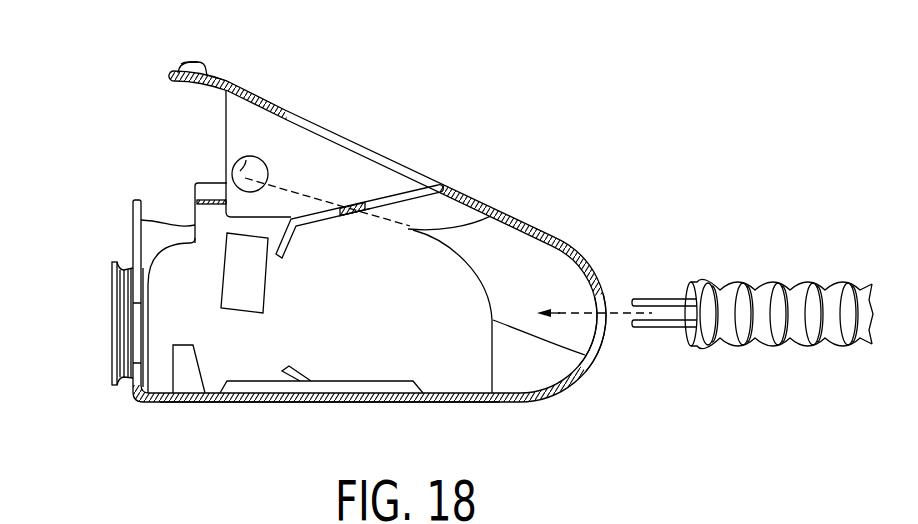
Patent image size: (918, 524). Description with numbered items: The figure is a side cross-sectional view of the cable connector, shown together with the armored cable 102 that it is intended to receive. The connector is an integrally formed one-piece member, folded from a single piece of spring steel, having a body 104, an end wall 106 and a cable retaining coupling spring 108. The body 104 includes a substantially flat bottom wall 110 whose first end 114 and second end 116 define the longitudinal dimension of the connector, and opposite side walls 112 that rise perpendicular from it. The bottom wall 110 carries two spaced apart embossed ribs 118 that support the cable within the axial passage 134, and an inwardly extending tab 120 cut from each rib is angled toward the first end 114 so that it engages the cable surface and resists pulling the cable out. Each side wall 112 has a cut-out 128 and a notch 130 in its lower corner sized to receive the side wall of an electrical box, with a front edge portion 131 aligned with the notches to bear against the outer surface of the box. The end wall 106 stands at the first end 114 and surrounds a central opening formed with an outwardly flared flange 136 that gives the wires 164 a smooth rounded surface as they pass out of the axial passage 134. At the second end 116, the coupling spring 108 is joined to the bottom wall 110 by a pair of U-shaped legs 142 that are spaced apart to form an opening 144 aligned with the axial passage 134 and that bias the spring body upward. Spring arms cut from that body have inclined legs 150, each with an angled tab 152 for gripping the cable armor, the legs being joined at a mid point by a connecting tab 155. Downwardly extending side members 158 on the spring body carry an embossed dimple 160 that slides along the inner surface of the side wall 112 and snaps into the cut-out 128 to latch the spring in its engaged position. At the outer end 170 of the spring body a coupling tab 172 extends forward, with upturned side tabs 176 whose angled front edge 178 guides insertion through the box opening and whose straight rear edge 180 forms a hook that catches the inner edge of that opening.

The cable 102 is at (764, 284).
The body 104 is at (448, 414).
The end wall 106 is at (126, 191).
The coupling spring 108 is at (292, 99).
The bottom wall 110 is at (280, 403).
The side walls 112 is at (585, 355).
The first end 114 is at (147, 404).
The second end 116 is at (492, 403).
The embossed ribs 118 is at (414, 380).
The tab 120 is at (288, 366).
The cut-out 128 is at (230, 262).
The notch 130 is at (190, 372).
The front edge portion 131 is at (133, 219).
The axial passage 134 is at (420, 296).
The flared flange 136 is at (112, 262).
The legs 142 is at (565, 241).
The opening 144 is at (604, 292).
The leg 150 is at (377, 198).
The angled tab 152 is at (283, 232).
The connecting tab 155 is at (358, 220).
The side members 158 is at (240, 143).
The embossed dimple 160 is at (240, 171).
The wires 164 is at (660, 299).
The outer end 170 is at (230, 76).
The coupling tab 172 is at (206, 56).
The outer side tabs 176 is at (178, 72).
The angled front edge 178 is at (186, 62).
The straight rear edge 180 is at (208, 69).